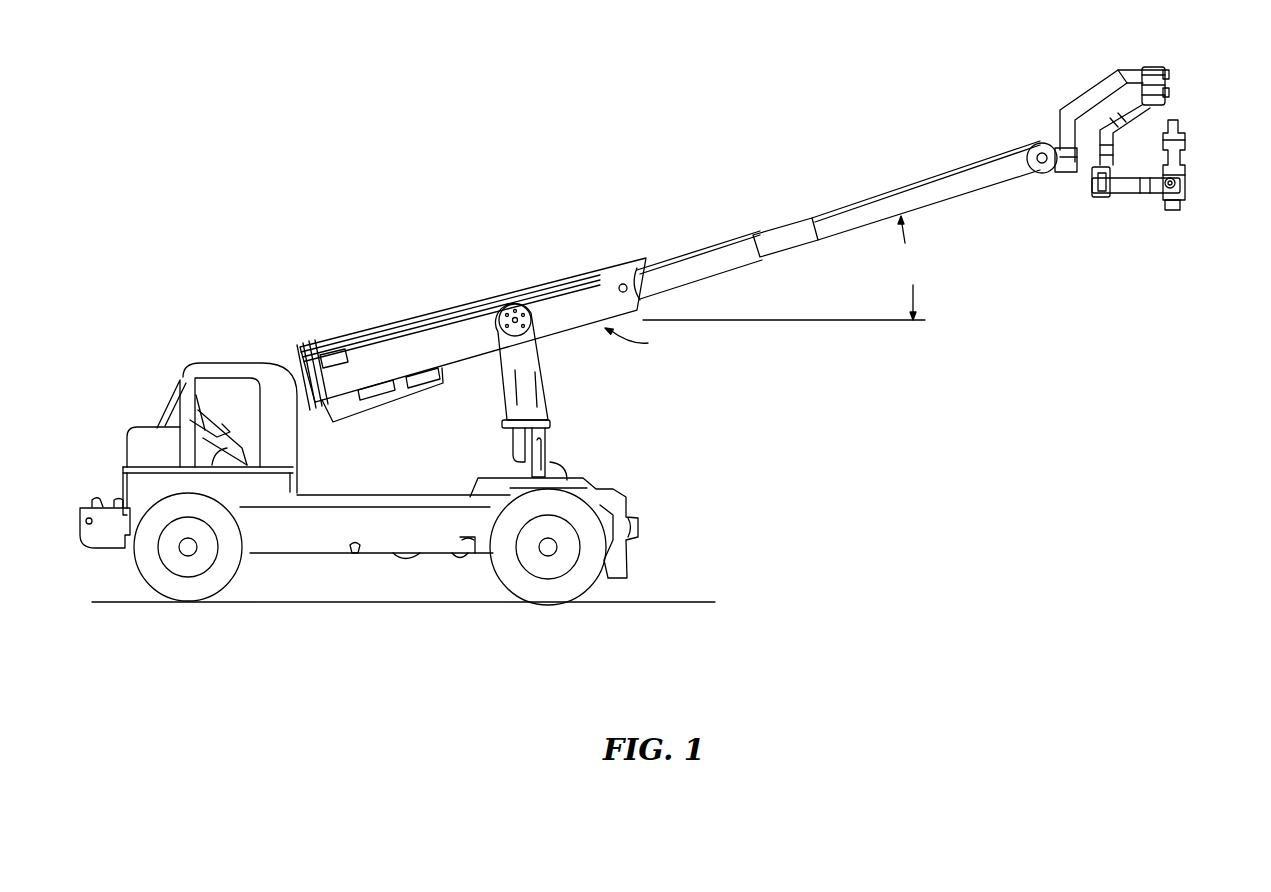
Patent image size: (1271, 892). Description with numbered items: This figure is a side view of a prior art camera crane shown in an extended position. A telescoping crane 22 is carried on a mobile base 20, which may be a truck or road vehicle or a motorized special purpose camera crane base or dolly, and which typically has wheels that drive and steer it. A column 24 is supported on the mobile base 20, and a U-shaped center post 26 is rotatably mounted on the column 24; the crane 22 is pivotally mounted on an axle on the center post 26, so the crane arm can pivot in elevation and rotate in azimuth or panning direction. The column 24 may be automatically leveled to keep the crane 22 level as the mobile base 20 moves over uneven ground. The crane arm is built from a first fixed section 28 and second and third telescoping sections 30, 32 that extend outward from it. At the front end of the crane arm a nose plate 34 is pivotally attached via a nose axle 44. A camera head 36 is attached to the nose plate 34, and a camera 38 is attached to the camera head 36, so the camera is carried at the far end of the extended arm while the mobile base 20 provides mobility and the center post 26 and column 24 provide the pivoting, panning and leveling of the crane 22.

The mobile base 20 is at (370, 454).
The telescoping crane 22 is at (772, 244).
The column 24 is at (503, 463).
The U-shaped center post 26 is at (542, 376).
The first fixed section 28 is at (452, 345).
The second telescoping section 30 is at (728, 258).
The third telescoping section 32 is at (945, 200).
The nose plate 34 is at (1060, 178).
The camera head 36 is at (1090, 165).
The camera 38 is at (1183, 138).
The nose axle 44 is at (1038, 148).